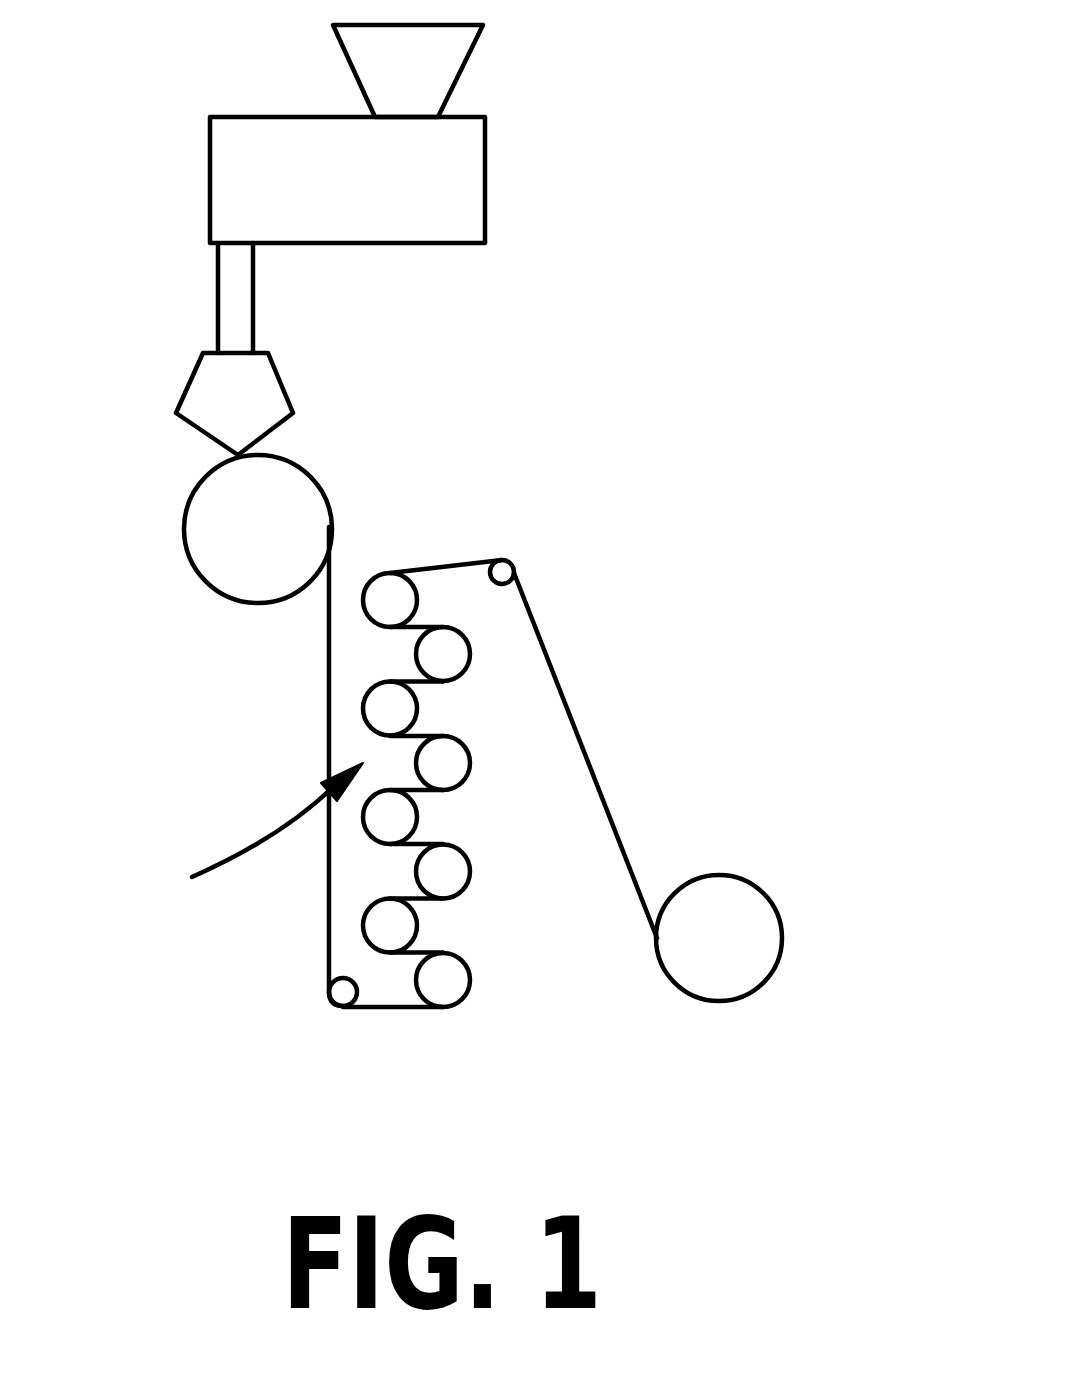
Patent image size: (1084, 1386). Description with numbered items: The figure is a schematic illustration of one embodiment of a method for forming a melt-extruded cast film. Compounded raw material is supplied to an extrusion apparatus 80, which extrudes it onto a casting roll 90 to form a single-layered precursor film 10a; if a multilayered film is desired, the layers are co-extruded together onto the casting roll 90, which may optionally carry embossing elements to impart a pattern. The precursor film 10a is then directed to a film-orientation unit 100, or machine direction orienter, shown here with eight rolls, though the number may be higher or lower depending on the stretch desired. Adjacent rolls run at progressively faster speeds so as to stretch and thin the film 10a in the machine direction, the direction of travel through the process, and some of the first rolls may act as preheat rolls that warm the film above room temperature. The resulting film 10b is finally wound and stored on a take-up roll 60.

The extrusion apparatus 80 is at (443, 185).
The casting roll 90 is at (230, 543).
The precursor film 10a is at (335, 570).
The resulting film 10b is at (602, 790).
The take-up roll 60 is at (755, 940).
The film-orientation unit 100 is at (230, 842).